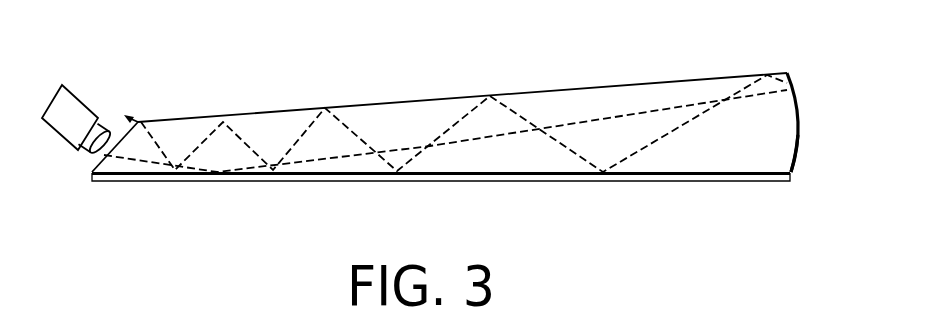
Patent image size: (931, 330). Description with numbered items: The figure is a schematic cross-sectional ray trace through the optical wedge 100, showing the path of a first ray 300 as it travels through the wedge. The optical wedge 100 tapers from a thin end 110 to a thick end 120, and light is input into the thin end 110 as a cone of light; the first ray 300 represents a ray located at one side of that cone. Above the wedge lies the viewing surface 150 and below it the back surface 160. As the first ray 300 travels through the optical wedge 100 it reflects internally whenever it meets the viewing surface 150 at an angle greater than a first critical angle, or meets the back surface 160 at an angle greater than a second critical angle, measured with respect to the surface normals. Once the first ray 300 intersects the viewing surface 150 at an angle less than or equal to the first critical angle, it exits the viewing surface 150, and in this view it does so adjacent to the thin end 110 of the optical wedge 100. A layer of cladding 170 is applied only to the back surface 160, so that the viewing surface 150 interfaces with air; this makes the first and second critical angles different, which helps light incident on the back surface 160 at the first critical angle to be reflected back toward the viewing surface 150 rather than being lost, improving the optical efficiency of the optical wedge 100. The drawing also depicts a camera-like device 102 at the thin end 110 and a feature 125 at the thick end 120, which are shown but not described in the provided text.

The optical wedge 100 is at (255, 64).
The camera 102 is at (72, 88).
The thin end 110 is at (105, 158).
The thick end 120 is at (812, 107).
The reflective end portion 125 is at (797, 157).
The viewing surface 150 is at (448, 100).
The back surface 160 is at (683, 172).
The layer of cladding 170 is at (635, 183).
The first ray 300 is at (306, 163).